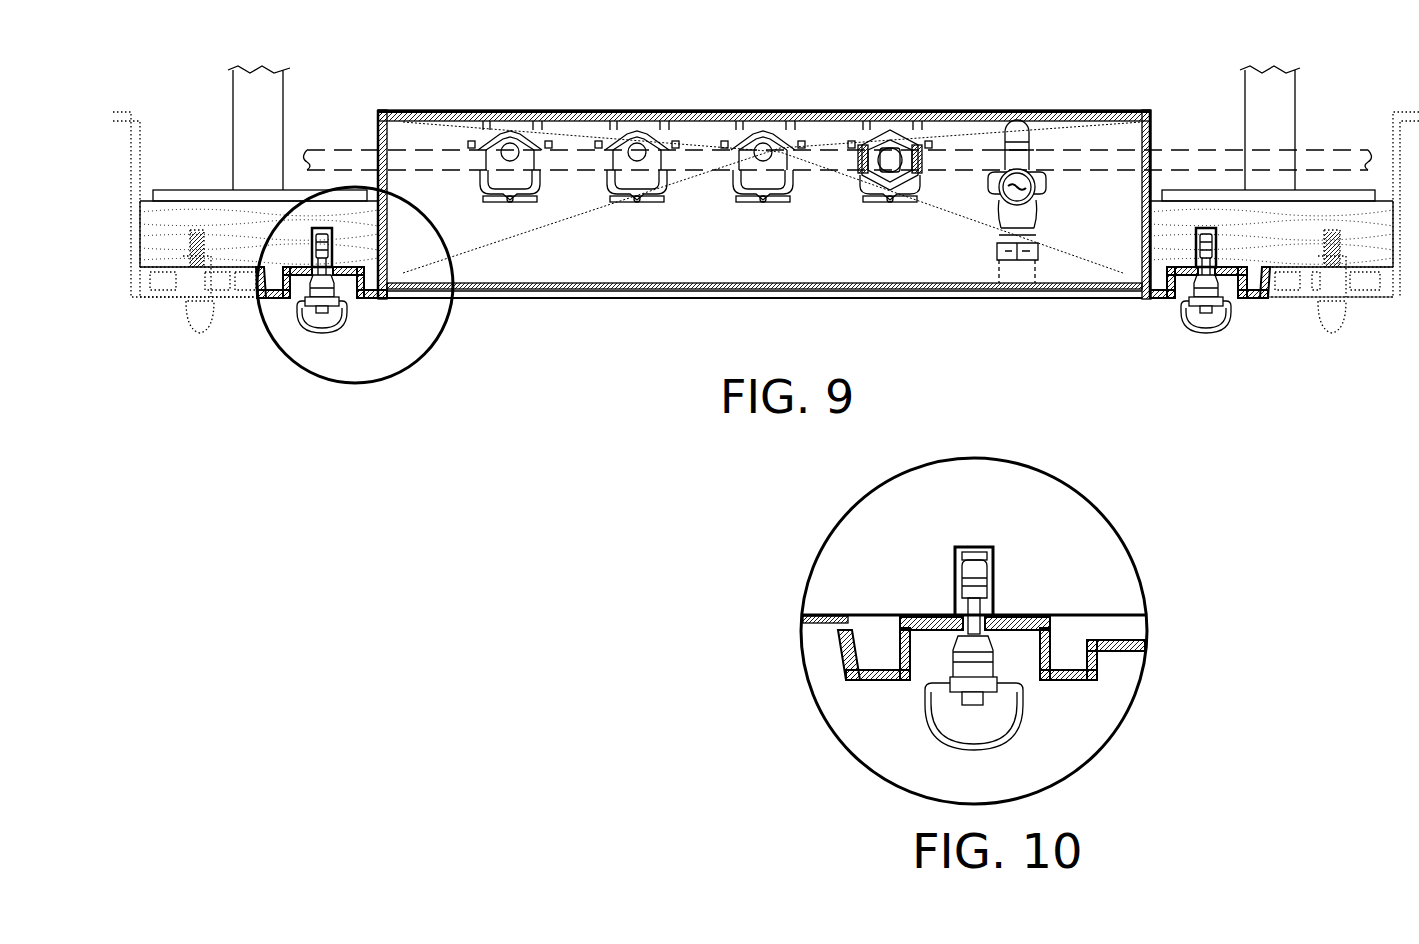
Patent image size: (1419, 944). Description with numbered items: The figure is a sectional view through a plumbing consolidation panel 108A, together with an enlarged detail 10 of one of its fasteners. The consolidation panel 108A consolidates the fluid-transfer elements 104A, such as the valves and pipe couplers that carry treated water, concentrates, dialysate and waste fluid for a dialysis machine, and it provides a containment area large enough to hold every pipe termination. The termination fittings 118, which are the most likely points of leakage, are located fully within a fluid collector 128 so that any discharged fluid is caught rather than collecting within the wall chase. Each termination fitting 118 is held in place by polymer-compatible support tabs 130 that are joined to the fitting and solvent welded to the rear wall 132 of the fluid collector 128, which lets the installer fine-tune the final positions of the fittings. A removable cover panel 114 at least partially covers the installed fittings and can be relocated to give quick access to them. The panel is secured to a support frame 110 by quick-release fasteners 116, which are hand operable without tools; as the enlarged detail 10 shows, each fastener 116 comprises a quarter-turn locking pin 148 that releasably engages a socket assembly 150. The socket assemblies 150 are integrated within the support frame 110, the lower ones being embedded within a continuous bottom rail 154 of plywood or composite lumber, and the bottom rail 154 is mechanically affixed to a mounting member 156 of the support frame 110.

In FIG. 9, the detail 10 is at (413, 367).
In FIG. 9, the fluid-transfer elements 104A is at (1095, 150).
In FIG. 9, the plumbing consolidation panel 108A is at (945, 318).
In FIG. 10, the plumbing consolidation panel 108A is at (1113, 673).
In FIG. 9, the support frame 110 is at (284, 94).
In FIG. 9, the removable cover panel 114 is at (1088, 297).
In FIG. 9, the quick-release fastener 116 is at (319, 358).
In FIG. 10, the quick-release fastener 116 is at (982, 675).
In FIG. 9, the termination fittings 118 is at (512, 200).
In FIG. 9, the fluid collector 128 is at (670, 265).
In FIG. 9, the support tabs 130 is at (497, 130).
In FIG. 9, the rear wall 132 is at (820, 110).
In FIG. 10, the quarter-turn locking pin 148 is at (953, 693).
In FIG. 10, the socket assembly 150 is at (993, 572).
In FIG. 9, the bottom rail 154 is at (180, 212).
In FIG. 9, the mounting member 156 is at (210, 190).